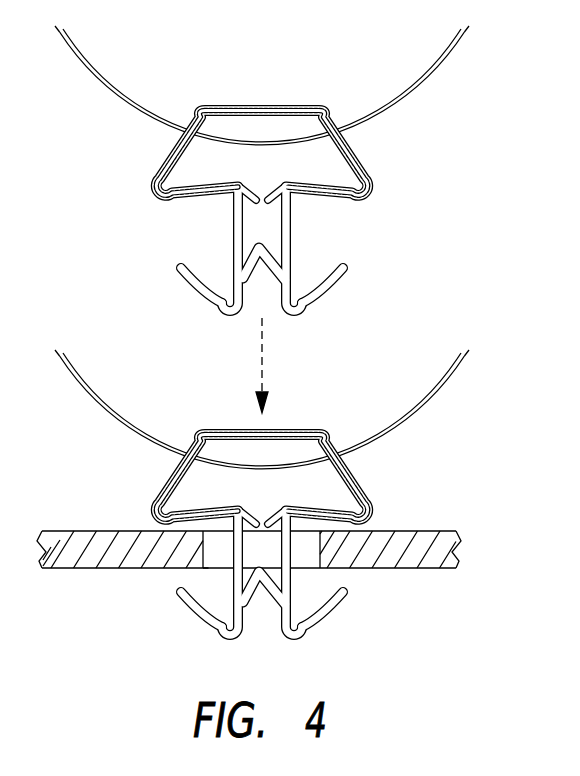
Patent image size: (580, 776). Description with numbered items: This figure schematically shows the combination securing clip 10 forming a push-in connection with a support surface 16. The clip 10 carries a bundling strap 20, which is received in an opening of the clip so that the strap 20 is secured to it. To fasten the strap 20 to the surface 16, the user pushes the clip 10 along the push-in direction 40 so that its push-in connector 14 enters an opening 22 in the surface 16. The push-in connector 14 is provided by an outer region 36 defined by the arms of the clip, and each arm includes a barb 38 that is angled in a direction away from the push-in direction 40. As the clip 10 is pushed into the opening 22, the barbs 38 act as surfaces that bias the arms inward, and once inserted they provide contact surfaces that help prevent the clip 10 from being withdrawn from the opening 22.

The combination securing clip 10 is at (333, 72).
The push-in connector 14 is at (133, 461).
The surface 16 is at (401, 530).
The bundling strap 20 is at (110, 82).
The opening 22 is at (320, 548).
The outer region 36 is at (210, 583).
The barbs 38 is at (188, 605).
The push-in direction 40 is at (260, 353).